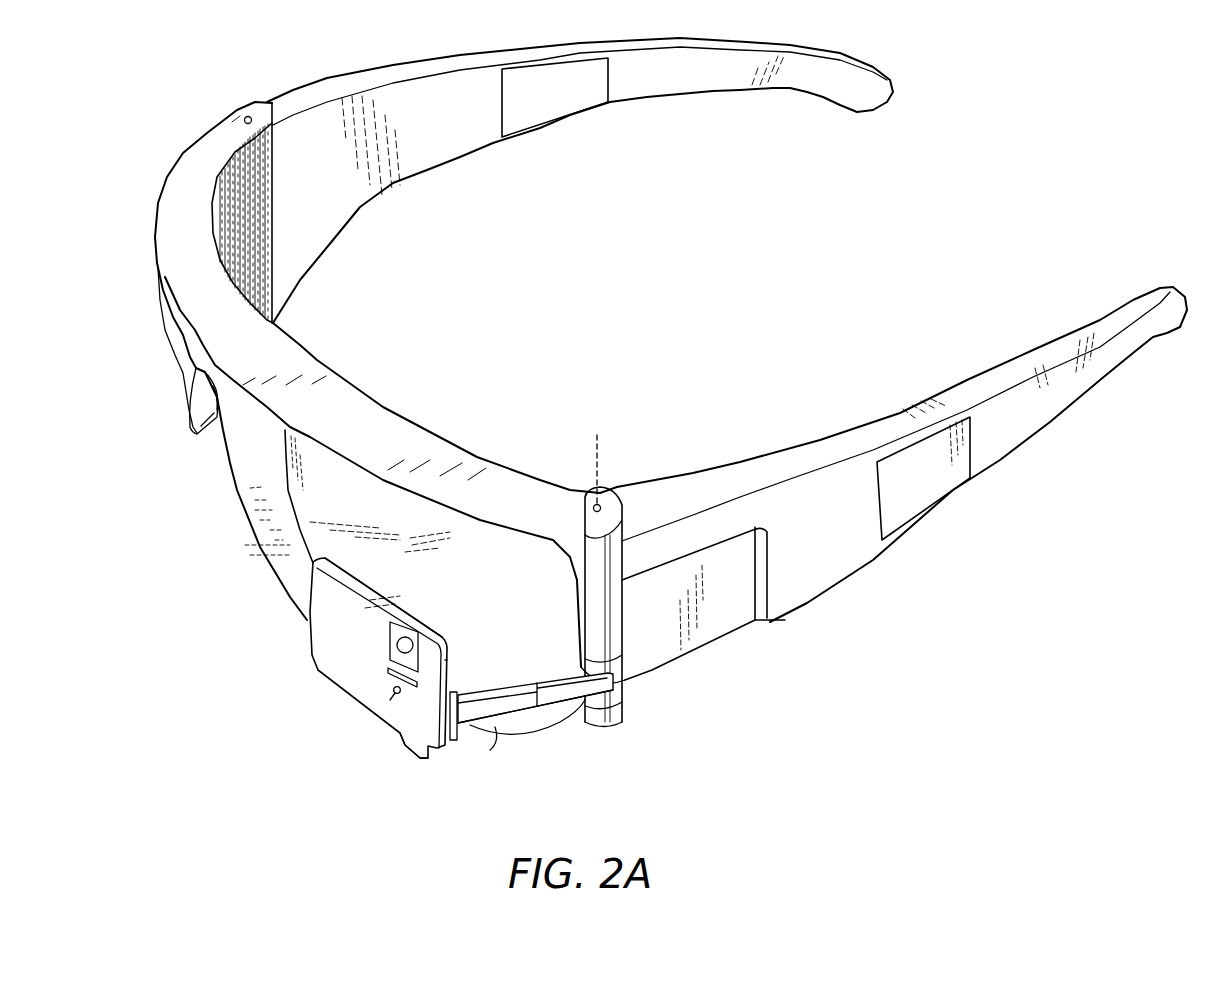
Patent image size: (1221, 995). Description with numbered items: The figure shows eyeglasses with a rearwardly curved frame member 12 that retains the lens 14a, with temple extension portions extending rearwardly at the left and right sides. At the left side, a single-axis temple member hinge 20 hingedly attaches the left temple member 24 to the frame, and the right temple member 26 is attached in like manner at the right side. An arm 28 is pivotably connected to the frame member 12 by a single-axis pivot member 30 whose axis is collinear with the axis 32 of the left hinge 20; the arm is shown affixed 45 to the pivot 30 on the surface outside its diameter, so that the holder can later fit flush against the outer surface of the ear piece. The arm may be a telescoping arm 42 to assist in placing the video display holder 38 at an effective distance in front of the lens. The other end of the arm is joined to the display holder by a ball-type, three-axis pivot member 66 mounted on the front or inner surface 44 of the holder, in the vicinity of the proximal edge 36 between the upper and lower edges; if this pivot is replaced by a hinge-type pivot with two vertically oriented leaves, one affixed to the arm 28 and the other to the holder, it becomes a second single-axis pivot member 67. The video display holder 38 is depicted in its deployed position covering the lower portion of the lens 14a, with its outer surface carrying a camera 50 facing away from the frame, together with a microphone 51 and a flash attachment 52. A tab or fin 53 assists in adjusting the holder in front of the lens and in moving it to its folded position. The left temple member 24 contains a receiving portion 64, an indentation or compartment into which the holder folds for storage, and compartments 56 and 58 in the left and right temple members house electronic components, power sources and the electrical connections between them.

The frame member 12 is at (258, 353).
The lens 14a is at (362, 505).
The left single-axis temple member hinge 20 is at (593, 586).
The left temple member 24 is at (829, 560).
The right temple member 26 is at (430, 140).
The arm 28 is at (528, 720).
The single-axis pivot member 30 is at (622, 672).
The axis 32 is at (600, 455).
The proximal edge 36 is at (443, 662).
The video display holder 38 is at (362, 668).
The telescoping arm 42 is at (531, 703).
The front (inner) surface 44 is at (393, 607).
The affixation of arm to pivot 45 is at (620, 698).
The camera 50 is at (390, 642).
The microphone 51 is at (393, 694).
The flash attachment 52 is at (389, 668).
The tab or fin 53 is at (418, 760).
The compartment 56 is at (926, 500).
The compartment 58 is at (568, 105).
The receiving portion 64 is at (674, 623).
The ball-type pivot member 66 is at (489, 739).
The second single-axis pivot member 67 is at (460, 718).